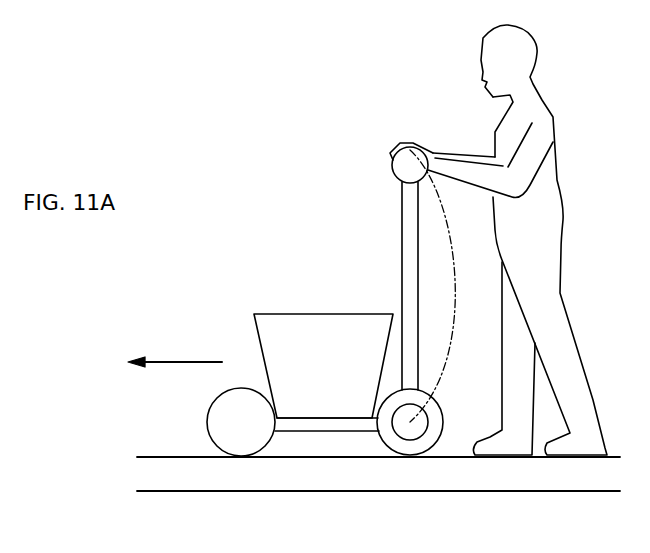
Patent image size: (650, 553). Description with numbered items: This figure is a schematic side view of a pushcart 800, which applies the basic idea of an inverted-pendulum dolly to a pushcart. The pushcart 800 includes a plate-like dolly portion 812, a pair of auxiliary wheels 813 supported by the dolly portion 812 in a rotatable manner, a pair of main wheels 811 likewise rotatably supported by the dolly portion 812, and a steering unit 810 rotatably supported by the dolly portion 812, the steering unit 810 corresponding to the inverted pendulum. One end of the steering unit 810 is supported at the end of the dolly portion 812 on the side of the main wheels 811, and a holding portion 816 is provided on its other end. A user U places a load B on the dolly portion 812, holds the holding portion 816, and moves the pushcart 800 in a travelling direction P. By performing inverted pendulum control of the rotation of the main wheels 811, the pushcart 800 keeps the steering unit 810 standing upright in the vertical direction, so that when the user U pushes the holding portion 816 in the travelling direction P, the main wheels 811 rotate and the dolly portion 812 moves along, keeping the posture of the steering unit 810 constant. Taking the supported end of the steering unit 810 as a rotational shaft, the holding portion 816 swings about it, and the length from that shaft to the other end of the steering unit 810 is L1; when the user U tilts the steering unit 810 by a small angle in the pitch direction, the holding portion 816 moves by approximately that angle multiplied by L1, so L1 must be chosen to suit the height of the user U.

The pushcart 800 is at (314, 342).
The steering unit 810 is at (410, 228).
The main wheels 811 is at (412, 447).
The dolly portion 812 is at (328, 425).
The auxiliary wheels 813 is at (242, 440).
The holding portion 816 is at (403, 166).
The load B is at (313, 329).
The travelling direction P is at (178, 358).
The length from rotational shaft to other end of steering unit L1 is at (437, 286).
The user U is at (525, 47).